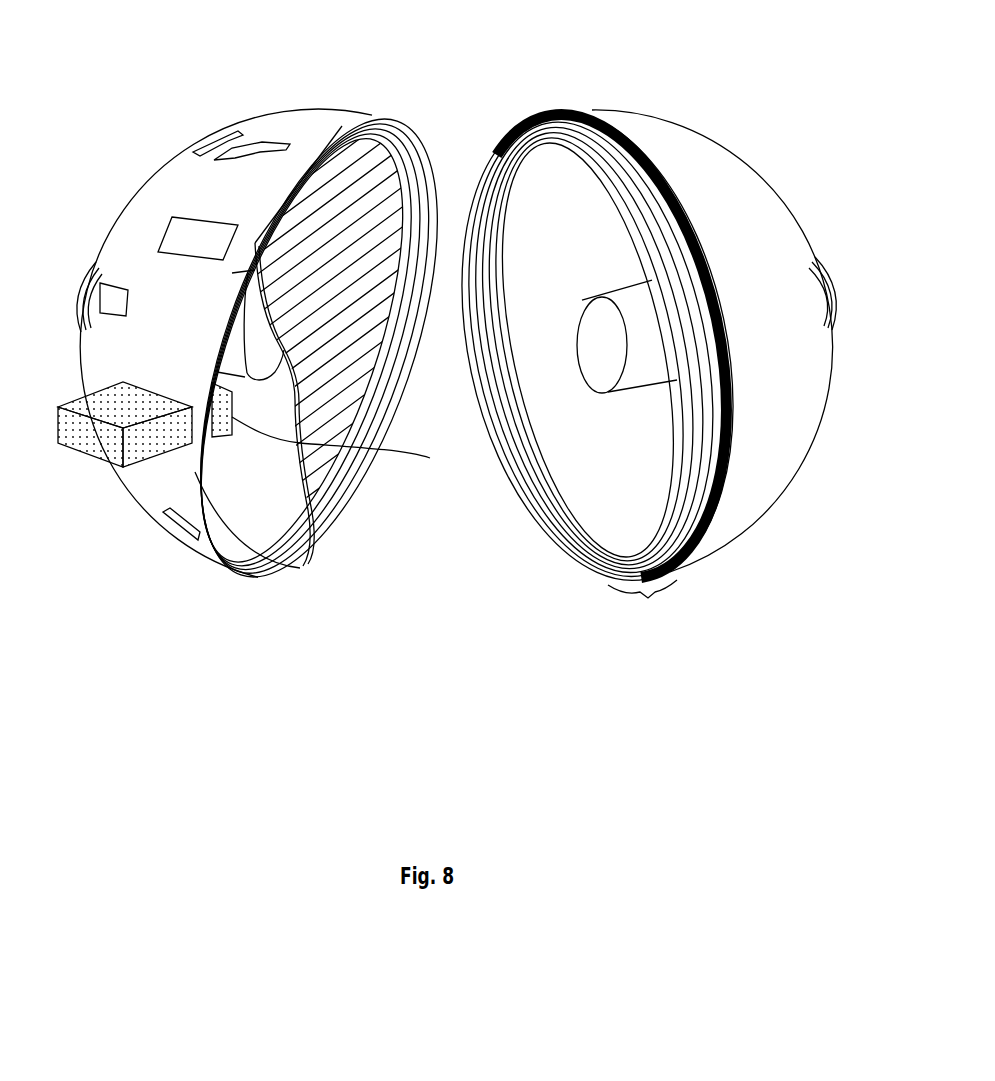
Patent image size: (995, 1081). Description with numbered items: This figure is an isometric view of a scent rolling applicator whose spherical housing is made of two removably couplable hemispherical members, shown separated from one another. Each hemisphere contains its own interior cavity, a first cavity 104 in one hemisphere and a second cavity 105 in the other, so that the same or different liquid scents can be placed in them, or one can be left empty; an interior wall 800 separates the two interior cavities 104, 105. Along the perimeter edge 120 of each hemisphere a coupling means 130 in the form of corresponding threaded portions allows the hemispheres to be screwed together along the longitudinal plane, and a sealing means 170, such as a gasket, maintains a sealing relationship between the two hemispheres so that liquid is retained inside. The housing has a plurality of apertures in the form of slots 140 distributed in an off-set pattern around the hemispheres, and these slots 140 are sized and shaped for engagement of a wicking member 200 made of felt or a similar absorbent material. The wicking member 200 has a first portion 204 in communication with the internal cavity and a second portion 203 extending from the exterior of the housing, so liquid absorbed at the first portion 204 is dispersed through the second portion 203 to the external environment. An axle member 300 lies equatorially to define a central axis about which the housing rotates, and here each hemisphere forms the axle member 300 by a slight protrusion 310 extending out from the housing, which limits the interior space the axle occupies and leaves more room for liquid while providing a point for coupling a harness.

The first cavity 104 is at (273, 510).
The second cavity 105 is at (580, 277).
The perimeter edge 120 is at (490, 152).
The coupling means 130 is at (648, 598).
The slots 140 is at (193, 218).
The sealing means 170 is at (612, 128).
The wicking member 200 is at (110, 400).
The second portion 203 is at (95, 438).
The first portion 204 is at (346, 429).
The axle member 300 is at (645, 290).
The protrusion 310 is at (97, 262).
The interior wall 800 is at (360, 162).